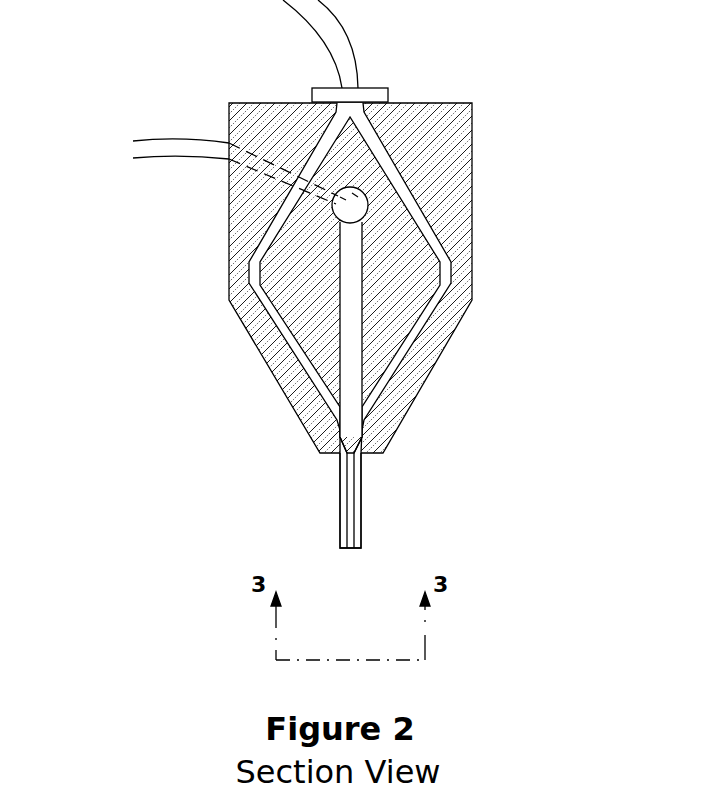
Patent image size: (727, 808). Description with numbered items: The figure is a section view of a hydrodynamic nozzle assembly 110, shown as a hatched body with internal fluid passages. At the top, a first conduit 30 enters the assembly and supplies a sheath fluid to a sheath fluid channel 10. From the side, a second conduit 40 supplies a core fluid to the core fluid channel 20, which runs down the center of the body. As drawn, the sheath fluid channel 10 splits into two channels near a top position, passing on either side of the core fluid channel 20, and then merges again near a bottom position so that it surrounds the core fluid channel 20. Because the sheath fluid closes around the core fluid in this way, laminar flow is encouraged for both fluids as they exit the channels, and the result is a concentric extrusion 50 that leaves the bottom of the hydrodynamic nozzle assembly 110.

The sheath fluid channel 10 is at (246, 282).
The core fluid channel 20 is at (363, 332).
The first conduit 30 is at (356, 55).
The second conduit 40 is at (152, 137).
The concentric extrusion 50 is at (339, 490).
The hydrodynamic nozzle assembly 110 is at (335, 274).